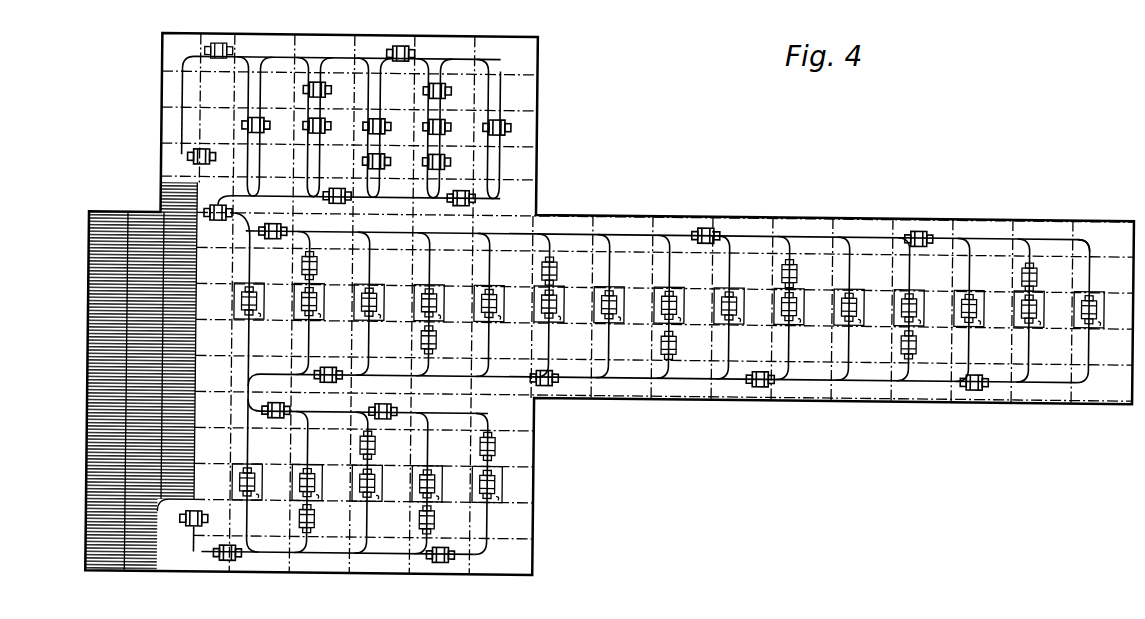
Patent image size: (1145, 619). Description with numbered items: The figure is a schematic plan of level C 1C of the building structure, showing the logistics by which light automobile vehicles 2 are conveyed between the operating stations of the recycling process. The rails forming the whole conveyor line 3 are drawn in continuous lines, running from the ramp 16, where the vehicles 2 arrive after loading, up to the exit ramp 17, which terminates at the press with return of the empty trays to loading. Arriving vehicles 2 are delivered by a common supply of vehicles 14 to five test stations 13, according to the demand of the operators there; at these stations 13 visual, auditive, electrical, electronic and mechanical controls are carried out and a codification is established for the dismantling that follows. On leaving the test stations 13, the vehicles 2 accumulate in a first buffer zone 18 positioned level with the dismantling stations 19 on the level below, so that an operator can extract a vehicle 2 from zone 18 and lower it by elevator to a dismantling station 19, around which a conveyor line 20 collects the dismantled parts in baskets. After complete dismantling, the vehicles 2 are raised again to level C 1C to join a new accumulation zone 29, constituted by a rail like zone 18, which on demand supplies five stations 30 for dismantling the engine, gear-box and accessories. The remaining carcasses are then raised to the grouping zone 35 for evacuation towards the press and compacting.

The level C of structure 1C is at (718, 215).
The light automobile vehicle 2 is at (215, 46).
The conveyor line 3 is at (178, 96).
The test station 13 is at (373, 128).
The common supply of vehicles 14 is at (342, 54).
The ramp 16 is at (191, 131).
The exit ramp 17 is at (194, 532).
The first buffer zone 18 is at (668, 235).
The dismantling station 19 is at (675, 307).
The conveyor line 20 is at (245, 382).
The accumulation zone 29 is at (662, 398).
The dismantling station for engine and gear-box 30 is at (373, 483).
The grouping zone 35 is at (337, 552).